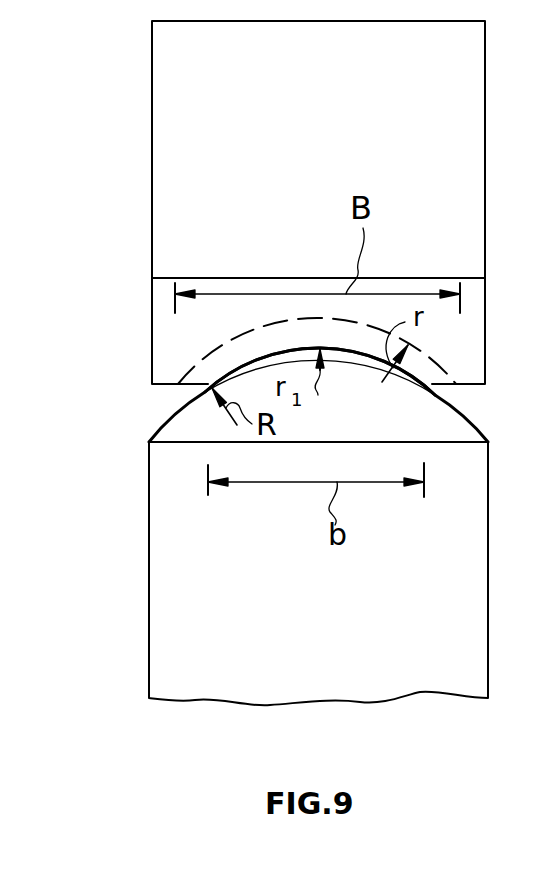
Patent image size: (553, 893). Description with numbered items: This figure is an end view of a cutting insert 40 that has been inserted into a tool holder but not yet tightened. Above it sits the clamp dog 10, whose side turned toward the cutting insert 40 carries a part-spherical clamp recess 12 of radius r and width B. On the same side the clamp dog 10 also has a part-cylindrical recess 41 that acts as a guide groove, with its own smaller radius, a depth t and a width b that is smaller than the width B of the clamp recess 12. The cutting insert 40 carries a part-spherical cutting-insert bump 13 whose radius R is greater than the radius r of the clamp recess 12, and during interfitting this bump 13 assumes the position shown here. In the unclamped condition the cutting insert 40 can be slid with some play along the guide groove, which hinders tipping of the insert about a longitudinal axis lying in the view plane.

The clamp dog 10 is at (340, 134).
The clamp recess 12 is at (253, 333).
The cutting-insert bump 13 is at (357, 427).
The cutting insert 40 is at (338, 617).
The part-cylindrical recess 41 is at (362, 353).